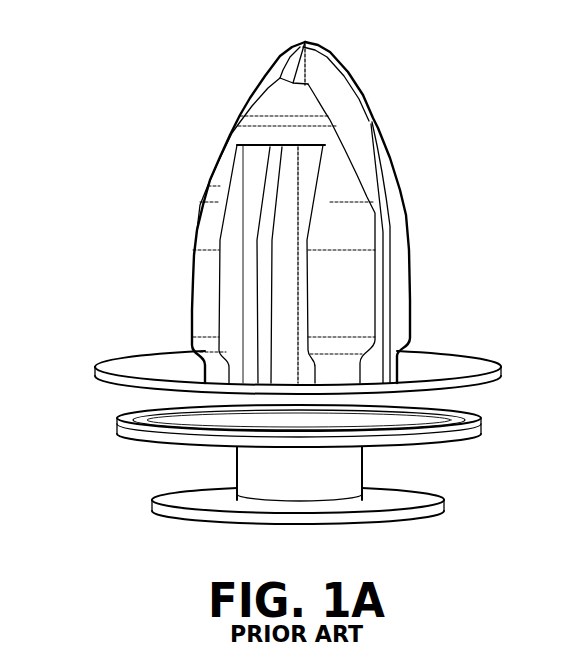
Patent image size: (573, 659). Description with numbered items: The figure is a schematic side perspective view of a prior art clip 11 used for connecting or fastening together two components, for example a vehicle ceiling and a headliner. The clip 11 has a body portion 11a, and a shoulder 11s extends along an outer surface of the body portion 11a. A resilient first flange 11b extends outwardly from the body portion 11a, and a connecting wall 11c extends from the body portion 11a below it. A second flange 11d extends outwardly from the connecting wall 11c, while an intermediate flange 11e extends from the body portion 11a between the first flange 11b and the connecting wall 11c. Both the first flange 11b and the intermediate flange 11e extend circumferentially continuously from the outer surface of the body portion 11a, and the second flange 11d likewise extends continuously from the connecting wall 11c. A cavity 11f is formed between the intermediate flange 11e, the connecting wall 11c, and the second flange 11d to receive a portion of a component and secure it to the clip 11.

The clip 11 is at (257, 69).
The body portion 11a is at (218, 185).
The shoulder 11s is at (411, 338).
The first flange 11b is at (147, 391).
The intermediate flange 11e is at (117, 425).
The connecting wall 11c is at (240, 465).
The second flange 11d is at (220, 531).
The cavity 11f is at (410, 458).